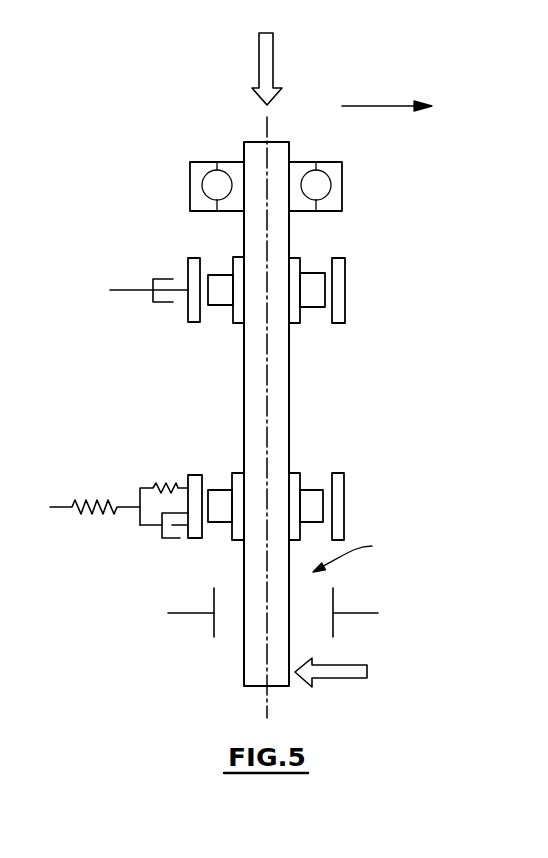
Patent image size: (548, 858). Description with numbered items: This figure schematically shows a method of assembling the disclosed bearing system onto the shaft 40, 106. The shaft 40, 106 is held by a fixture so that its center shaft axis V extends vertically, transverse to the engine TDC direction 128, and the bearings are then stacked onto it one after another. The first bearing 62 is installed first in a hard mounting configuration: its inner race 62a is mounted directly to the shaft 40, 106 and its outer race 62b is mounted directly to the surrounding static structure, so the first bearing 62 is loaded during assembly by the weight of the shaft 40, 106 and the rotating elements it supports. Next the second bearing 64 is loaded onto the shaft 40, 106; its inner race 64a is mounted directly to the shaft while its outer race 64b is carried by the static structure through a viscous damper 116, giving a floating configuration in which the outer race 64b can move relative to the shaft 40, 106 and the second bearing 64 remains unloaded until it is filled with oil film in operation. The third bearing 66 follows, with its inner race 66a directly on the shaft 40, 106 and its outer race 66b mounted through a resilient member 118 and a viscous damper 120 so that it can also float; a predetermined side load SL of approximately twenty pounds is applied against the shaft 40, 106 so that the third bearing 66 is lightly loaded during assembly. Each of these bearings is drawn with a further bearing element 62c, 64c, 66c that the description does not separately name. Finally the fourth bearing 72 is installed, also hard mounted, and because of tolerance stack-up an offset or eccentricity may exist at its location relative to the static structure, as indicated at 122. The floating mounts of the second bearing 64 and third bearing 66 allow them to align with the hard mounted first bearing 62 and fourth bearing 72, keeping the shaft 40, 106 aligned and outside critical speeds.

The engine TDC direction 128 is at (370, 106).
The shaft 40 is at (206, 417).
The shaft 106 is at (248, 377).
The center shaft axis V is at (265, 130).
The first bearing 62 is at (275, 167).
The inner race 62a is at (297, 173).
The outer race 62b is at (343, 177).
The bearing element 62c is at (213, 177).
The second bearing 64 is at (259, 294).
The inner race 64a is at (236, 262).
The outer race 64b is at (188, 315).
The rolling element 64c is at (310, 300).
The viscous damper 116 is at (153, 279).
The third bearing 66 is at (276, 509).
The inner race 66a is at (234, 482).
The outer race 66b is at (197, 538).
The rolling element 66c is at (310, 502).
The resilient member 118 is at (119, 499).
The viscous damper 120 is at (168, 538).
The offset or eccentricity 122 is at (362, 553).
The fourth bearing 72 is at (338, 598).
The side load SL is at (350, 665).